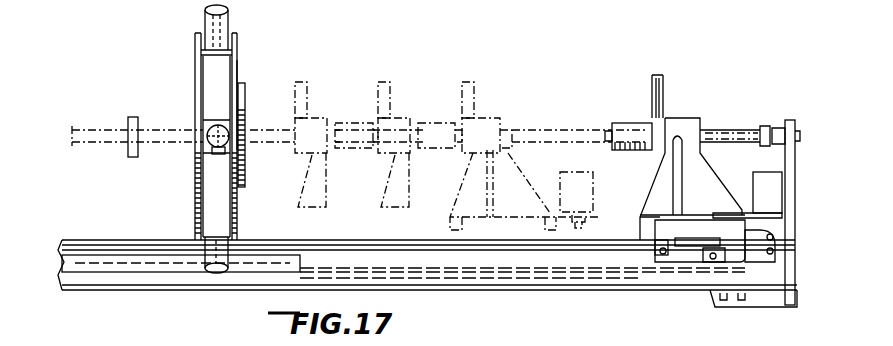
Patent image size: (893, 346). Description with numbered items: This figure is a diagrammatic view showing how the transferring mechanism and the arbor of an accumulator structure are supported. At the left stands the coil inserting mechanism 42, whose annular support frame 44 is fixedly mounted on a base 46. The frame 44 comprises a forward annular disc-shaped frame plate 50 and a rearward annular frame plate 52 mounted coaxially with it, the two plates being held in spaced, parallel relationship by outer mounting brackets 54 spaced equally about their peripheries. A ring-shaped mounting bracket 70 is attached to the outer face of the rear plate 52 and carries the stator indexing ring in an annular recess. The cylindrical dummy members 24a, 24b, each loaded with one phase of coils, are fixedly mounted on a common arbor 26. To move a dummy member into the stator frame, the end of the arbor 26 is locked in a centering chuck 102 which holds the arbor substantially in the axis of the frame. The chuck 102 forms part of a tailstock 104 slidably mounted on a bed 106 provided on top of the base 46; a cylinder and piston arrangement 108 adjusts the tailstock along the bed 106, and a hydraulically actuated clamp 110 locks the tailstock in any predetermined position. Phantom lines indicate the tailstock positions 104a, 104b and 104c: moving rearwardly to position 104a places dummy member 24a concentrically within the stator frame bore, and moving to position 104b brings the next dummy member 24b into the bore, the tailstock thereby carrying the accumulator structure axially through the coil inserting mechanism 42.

The coil inserting mechanism 42 is at (209, 139).
The annular support frame 44 is at (236, 46).
The outer mounting brackets 54 is at (233, 52).
The forward annular frame plate 50 is at (196, 81).
The rearward annular frame plate 52 is at (238, 80).
The dummy member 24a is at (216, 125).
The ring-shaped mounting bracket 70 is at (246, 99).
The arbor 26 is at (106, 130).
The dummy member 24b is at (128, 148).
The tailstock position 104a is at (318, 116).
The tailstock position 104b is at (401, 116).
The chuck position c 104c is at (486, 116).
The centering chuck 102 is at (632, 124).
The tailstock 104 is at (683, 124).
The hydraulically actuated clamp 110 is at (762, 215).
The base 46 is at (340, 258).
The bed 106 is at (398, 244).
The cylinder and piston arrangement 108 is at (300, 272).